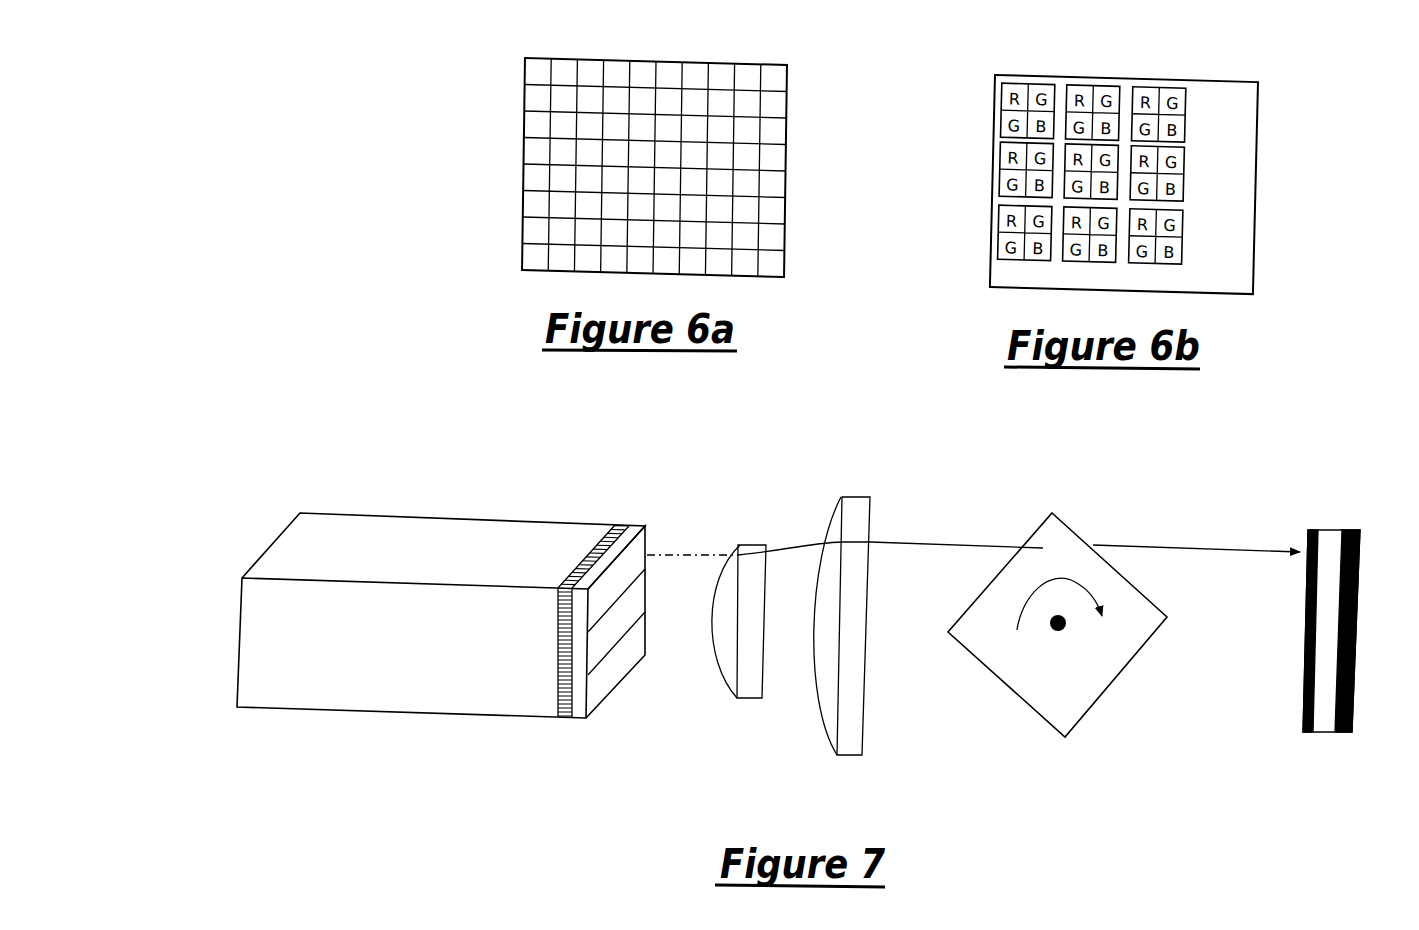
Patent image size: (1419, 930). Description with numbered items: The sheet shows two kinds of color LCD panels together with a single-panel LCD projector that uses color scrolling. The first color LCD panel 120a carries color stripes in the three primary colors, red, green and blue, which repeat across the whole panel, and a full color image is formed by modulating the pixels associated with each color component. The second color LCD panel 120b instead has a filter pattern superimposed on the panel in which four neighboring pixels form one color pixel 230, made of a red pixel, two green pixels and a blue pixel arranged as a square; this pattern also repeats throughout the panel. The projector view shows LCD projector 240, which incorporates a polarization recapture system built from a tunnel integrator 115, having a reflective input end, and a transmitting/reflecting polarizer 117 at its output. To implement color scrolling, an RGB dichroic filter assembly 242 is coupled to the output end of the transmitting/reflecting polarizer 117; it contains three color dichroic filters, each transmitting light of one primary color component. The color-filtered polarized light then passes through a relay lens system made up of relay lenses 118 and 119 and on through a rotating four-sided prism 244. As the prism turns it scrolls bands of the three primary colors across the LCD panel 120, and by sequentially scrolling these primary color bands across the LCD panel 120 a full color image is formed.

In FIG. 6A, the color LCD panel 120a is at (525, 87).
In FIG. 6B, the color LCD panel 120b is at (1098, 149).
In FIG. 6B, the color pixel 230 is at (1040, 84).
In FIG. 7, the LCD projector 240 is at (358, 460).
In FIG. 7, the RGB dichroic filter assembly 242 is at (643, 526).
In FIG. 7, the tunnel integrator 115 is at (332, 710).
In FIG. 7, the transmitting/reflecting polarizer 117 is at (560, 720).
In FIG. 7, the relay lens 118 is at (740, 700).
In FIG. 7, the relay lens 119 is at (845, 757).
In FIG. 7, the rotating four-sided prism 244 is at (1042, 528).
In FIG. 7, the LCD panel 120 is at (1330, 733).